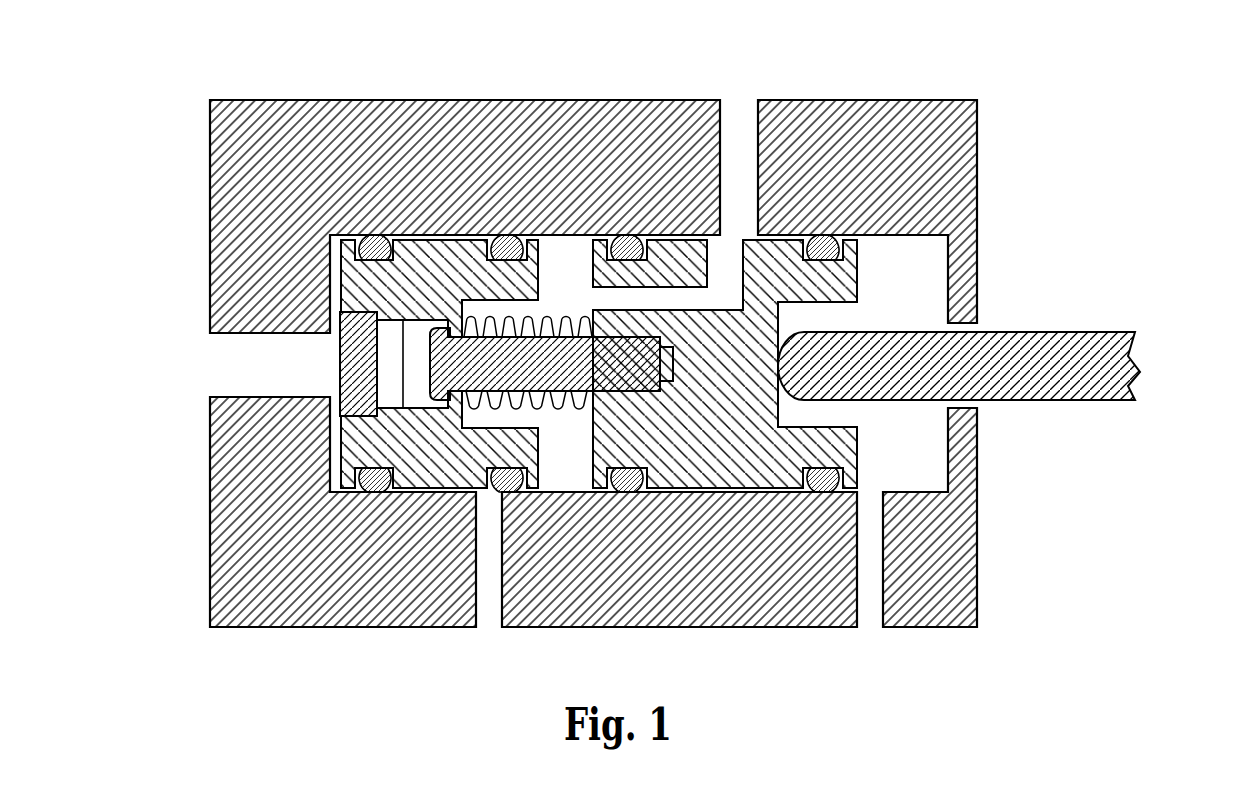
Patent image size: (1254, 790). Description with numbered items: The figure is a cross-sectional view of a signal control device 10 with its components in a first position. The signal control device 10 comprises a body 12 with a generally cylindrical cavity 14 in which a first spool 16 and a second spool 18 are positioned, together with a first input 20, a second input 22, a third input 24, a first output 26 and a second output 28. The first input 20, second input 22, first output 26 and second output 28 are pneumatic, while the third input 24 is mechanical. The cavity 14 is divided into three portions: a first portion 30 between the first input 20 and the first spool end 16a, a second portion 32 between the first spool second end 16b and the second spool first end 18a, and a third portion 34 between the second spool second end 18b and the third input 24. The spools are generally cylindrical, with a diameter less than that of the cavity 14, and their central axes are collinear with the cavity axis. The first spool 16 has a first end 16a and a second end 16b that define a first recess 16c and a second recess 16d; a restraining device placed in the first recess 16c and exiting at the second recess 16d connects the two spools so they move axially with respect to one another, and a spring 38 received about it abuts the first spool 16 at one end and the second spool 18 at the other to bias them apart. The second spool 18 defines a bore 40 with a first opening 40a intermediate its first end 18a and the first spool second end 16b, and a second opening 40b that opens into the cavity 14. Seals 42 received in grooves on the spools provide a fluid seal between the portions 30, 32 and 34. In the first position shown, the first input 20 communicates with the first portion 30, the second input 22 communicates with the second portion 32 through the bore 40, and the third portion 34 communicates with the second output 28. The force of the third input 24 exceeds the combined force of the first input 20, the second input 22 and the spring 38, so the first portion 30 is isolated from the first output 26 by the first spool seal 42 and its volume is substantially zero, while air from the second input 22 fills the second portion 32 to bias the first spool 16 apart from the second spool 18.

The signal control device 10 is at (676, 362).
The body 12 is at (502, 150).
The generally cylindrical cavity 14 is at (890, 240).
The first spool 16 is at (417, 459).
The first spool first end 16a is at (342, 276).
The first spool second end 16b is at (539, 459).
The first spool first recess 16c is at (393, 398).
The first spool second recess 16d is at (527, 300).
The second spool 18 is at (705, 459).
The second spool first end 18a is at (592, 459).
The second spool second end 18b is at (860, 286).
The first input 20 is at (197, 362).
The second input 22 is at (737, 90).
The third input 24 is at (1154, 366).
The first output 26 is at (490, 640).
The second output 28 is at (870, 640).
The first portion 30 is at (345, 420).
The second portion 32 is at (557, 450).
The third portion 34 is at (876, 459).
The spring 38 is at (496, 405).
The bore 40 is at (647, 244).
The first opening 40a is at (594, 299).
The second opening 40b is at (733, 240).
The seals 42 is at (506, 245).